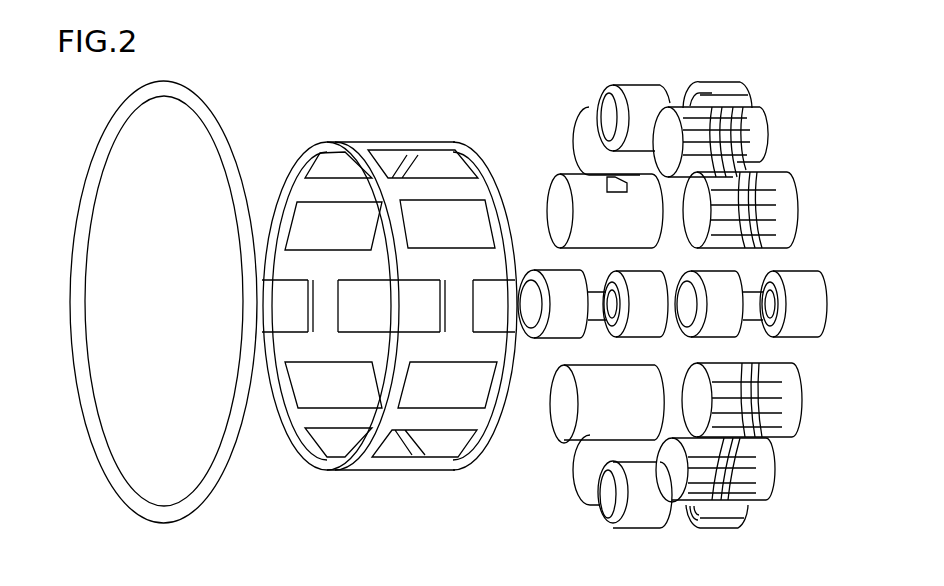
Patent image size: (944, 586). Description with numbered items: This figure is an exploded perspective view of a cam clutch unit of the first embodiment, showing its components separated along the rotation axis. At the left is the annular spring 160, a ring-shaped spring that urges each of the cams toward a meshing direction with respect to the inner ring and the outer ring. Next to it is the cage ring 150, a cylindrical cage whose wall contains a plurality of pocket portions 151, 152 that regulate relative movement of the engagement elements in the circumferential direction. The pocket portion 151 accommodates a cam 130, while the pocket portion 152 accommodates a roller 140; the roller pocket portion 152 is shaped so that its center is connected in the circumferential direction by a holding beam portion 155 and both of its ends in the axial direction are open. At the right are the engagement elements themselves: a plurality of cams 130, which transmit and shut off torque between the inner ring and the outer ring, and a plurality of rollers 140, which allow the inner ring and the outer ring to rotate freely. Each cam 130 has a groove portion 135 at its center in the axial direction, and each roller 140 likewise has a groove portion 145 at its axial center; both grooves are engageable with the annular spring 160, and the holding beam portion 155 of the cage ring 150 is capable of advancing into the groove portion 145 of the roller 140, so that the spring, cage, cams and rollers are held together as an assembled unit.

The cam 130 is at (785, 213).
The groove portion 135 is at (755, 200).
The roller 140 is at (807, 313).
The groove portion 145 is at (757, 340).
The cage ring 150 is at (303, 150).
The pocket portion 151 is at (450, 218).
The pocket portion 152 is at (353, 142).
The holding beam portion 155 is at (322, 310).
The annular spring 160 is at (106, 144).